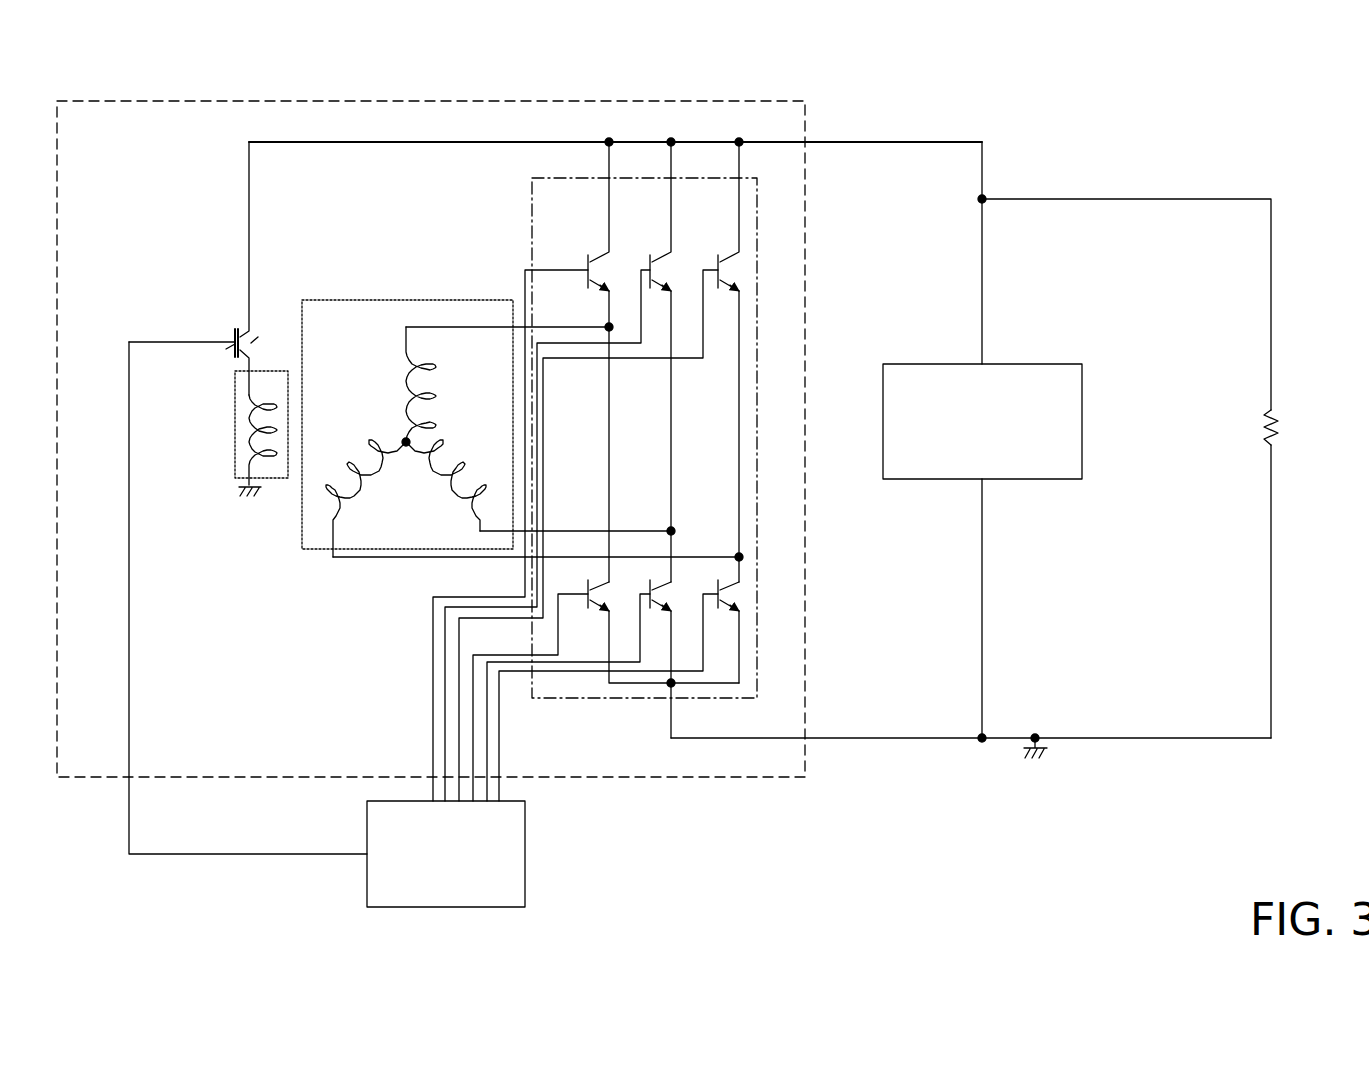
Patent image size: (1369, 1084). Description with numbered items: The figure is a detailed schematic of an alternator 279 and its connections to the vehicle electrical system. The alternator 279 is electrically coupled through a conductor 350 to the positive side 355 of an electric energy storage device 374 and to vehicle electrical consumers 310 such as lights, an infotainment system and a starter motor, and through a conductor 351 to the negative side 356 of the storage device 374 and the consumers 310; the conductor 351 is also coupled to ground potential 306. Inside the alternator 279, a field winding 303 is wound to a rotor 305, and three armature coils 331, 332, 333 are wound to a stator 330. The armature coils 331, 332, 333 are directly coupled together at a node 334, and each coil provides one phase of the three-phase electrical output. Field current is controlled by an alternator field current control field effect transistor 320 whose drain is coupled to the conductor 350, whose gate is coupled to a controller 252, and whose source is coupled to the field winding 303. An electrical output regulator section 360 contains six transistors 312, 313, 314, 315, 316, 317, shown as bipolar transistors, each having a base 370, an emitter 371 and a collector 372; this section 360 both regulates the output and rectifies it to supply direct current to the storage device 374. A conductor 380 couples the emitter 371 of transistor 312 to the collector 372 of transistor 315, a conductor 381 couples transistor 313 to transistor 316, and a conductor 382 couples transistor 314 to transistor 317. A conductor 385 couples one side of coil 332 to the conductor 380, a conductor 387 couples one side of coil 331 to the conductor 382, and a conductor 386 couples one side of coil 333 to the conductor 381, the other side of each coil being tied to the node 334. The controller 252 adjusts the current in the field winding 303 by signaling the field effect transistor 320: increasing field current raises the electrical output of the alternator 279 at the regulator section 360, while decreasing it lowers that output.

The alternator 279 is at (75, 99).
The conductor 350 is at (942, 141).
The conductor 351 is at (921, 737).
The electrical output regulator section 360 is at (530, 205).
The transistor 312 is at (583, 255).
The transistor 313 is at (647, 255).
The transistor 314 is at (714, 255).
The transistor 315 is at (598, 612).
The transistor 316 is at (680, 578).
The transistor 317 is at (745, 622).
The base 370 is at (587, 274).
The emitter 371 is at (603, 288).
The collector 372 is at (604, 256).
The stator 330 is at (336, 300).
The armature coil 331 is at (365, 447).
The armature coil 332 is at (402, 373).
The armature coil 333 is at (446, 497).
The node 334 is at (402, 440).
The conductor 385 is at (499, 329).
The conductor 386 is at (567, 530).
The conductor 387 is at (425, 560).
The conductor 380 is at (602, 376).
The conductor 381 is at (664, 376).
The conductor 382 is at (739, 374).
The alternator field current control field effect transistor 320 is at (228, 324).
The field winding 303 is at (246, 447).
The rotor 305 is at (283, 482).
The ground potential 306 is at (238, 491).
The positive side 355 is at (930, 332).
The negative side 356 is at (948, 510).
The electric energy storage device 374 is at (1072, 364).
The vehicle electrical consumers 310 is at (1146, 466).
The controller 252 is at (431, 878).